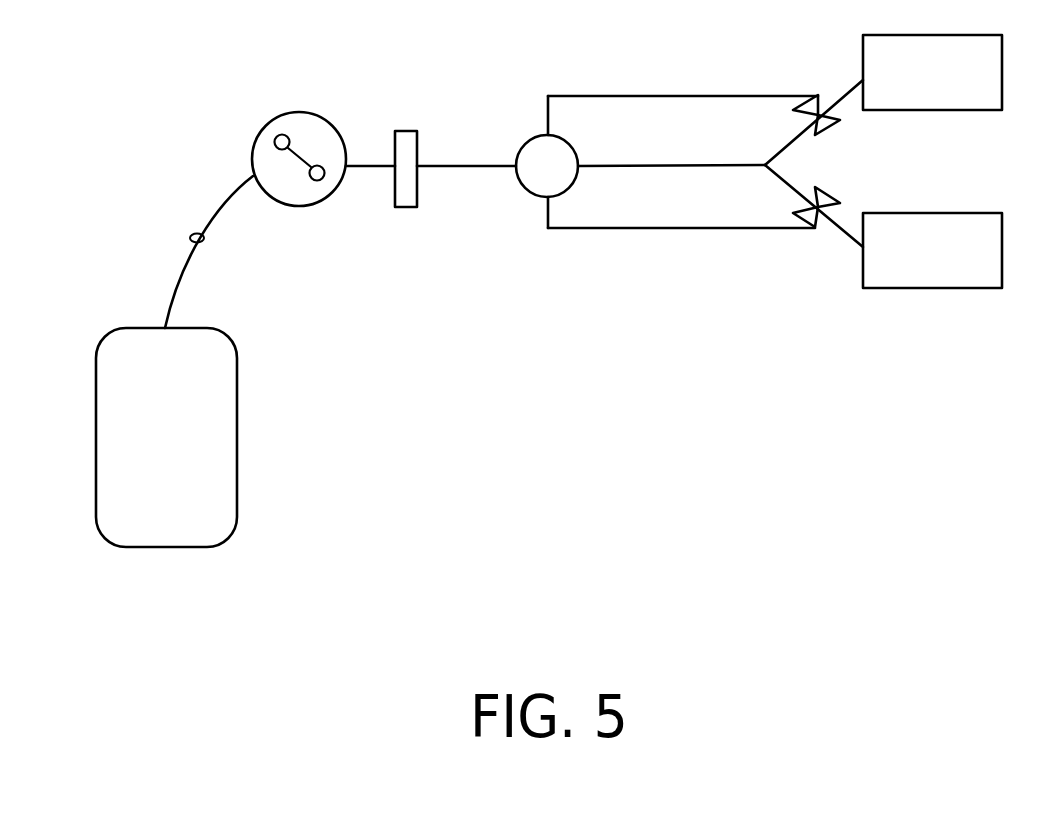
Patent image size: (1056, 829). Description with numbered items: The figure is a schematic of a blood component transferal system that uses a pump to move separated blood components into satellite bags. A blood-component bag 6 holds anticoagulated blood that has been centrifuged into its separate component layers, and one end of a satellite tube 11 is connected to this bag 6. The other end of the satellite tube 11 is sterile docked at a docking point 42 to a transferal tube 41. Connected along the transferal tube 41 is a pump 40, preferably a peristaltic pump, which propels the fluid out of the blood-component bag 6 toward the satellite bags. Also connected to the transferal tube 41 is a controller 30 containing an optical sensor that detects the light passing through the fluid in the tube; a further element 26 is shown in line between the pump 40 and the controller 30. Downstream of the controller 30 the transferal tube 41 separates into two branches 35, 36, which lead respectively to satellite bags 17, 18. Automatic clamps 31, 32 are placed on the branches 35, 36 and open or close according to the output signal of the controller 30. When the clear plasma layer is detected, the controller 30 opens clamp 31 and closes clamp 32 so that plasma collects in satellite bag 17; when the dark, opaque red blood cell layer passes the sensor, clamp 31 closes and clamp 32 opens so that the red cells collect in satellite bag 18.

The blood-component bag 6 is at (237, 372).
The satellite tube 11 is at (173, 285).
The satellite bag 17 is at (937, 110).
The satellite bag 18 is at (928, 288).
The filter 26 is at (407, 131).
The controller 30 is at (531, 192).
The automatic clamp 31 is at (818, 95).
The automatic clamp 32 is at (818, 228).
The branch 35 is at (783, 143).
The branch 36 is at (788, 188).
The pump 40 is at (253, 149).
The transferal tube 41 is at (223, 202).
The docking point 42 is at (190, 238).